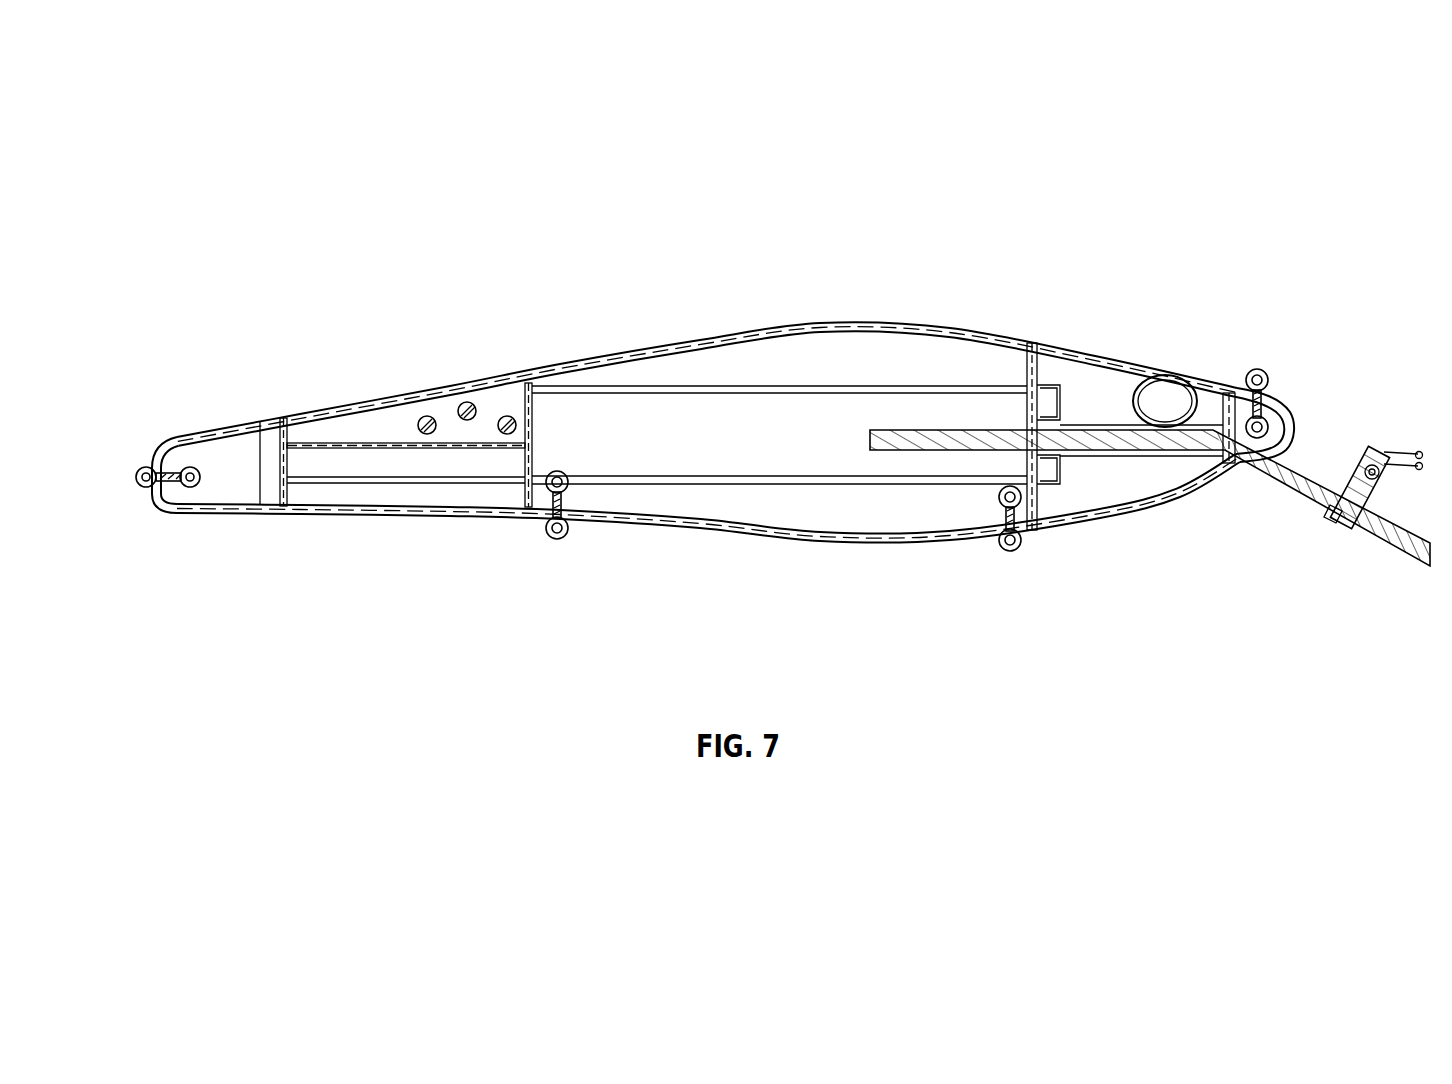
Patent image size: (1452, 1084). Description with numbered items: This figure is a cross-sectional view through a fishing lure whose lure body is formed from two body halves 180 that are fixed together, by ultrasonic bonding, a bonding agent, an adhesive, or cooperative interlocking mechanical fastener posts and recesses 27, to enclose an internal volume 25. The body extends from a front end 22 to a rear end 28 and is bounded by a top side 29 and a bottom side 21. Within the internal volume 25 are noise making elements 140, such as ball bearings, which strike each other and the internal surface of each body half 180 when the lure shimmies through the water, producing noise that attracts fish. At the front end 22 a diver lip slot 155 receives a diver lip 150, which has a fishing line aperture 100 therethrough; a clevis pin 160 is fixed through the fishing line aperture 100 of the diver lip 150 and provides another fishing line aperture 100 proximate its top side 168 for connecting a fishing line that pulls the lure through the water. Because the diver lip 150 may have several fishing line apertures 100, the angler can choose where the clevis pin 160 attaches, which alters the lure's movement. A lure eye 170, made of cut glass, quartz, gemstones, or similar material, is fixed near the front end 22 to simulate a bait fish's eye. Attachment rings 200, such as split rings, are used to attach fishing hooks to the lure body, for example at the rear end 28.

The bottom side 21 is at (832, 547).
The front end 22 is at (1290, 407).
The internal volume 25 is at (963, 417).
The fastener posts and recesses 27 is at (192, 493).
The rear end 28 is at (163, 515).
The top side 29 is at (930, 327).
The fishing line aperture 100 is at (1335, 478).
The noise making elements 140 is at (467, 400).
The diver lip 150 is at (1423, 570).
The diver lip slot 155 is at (1120, 448).
The clevis pin 160 is at (1337, 515).
The top side 168 is at (1367, 457).
The lure eyes 170 is at (1163, 393).
The body halves 180 is at (942, 522).
The attachment ring 200 is at (153, 453).